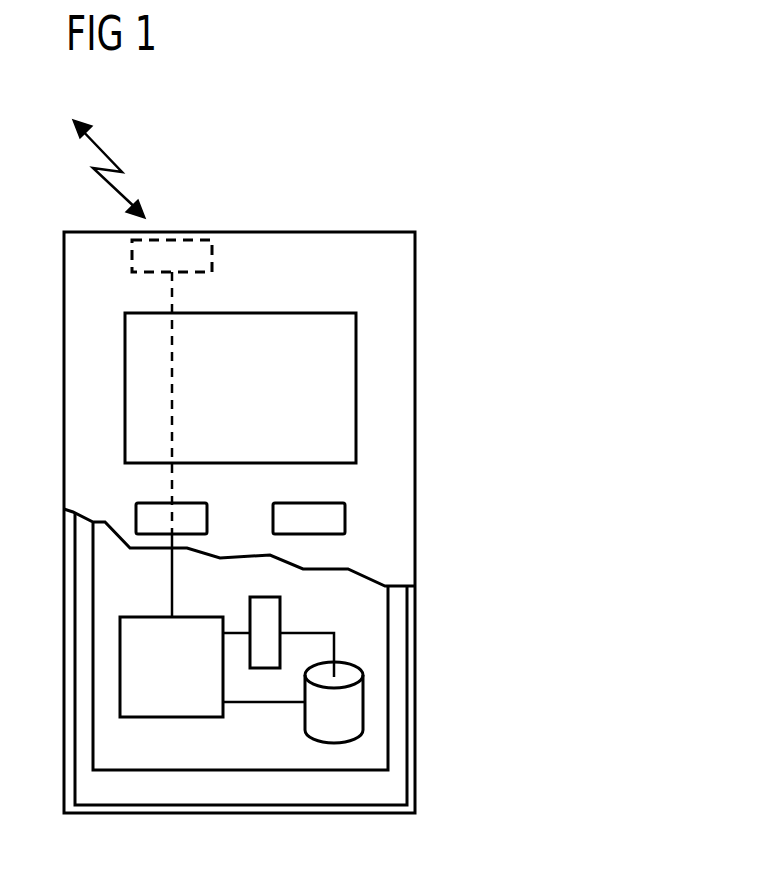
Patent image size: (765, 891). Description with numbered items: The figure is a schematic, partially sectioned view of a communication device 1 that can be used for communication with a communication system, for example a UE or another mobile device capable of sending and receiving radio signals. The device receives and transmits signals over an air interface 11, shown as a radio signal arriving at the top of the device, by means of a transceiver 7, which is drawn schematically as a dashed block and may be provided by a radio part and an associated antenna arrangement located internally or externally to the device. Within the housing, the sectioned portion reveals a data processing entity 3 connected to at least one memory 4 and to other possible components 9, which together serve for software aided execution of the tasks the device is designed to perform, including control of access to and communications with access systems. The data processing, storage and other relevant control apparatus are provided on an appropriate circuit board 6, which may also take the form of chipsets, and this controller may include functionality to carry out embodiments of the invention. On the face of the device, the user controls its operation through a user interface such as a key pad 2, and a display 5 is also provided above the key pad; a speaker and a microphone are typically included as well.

The communication device 1 is at (350, 188).
The key pad 2 is at (208, 517).
The data processing entity 3 is at (145, 615).
The memory 4 is at (302, 720).
The display 5 is at (313, 312).
The circuit board 6 is at (190, 758).
The transceiver 7 is at (212, 259).
The other components 9 is at (282, 617).
The air interface 11 is at (103, 150).